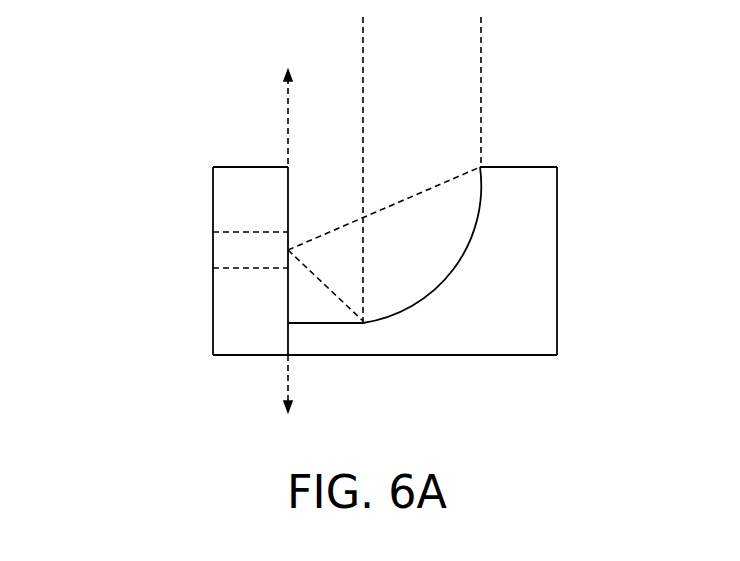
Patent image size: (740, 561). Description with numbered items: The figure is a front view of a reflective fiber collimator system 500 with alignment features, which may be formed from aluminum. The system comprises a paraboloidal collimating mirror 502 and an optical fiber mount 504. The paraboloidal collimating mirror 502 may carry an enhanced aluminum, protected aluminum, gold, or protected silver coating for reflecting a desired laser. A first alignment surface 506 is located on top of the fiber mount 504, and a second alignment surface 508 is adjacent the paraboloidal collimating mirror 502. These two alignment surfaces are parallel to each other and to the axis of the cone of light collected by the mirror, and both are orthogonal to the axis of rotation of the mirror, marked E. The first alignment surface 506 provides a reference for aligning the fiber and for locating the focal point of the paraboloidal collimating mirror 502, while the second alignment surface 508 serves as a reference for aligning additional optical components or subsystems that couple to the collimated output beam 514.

The reflective fiber collimator system 500 is at (98, 70).
The paraboloidal collimating mirror 502 is at (488, 209).
The optical fiber mount 504 is at (204, 194).
The first alignment surface 506 is at (254, 155).
The second alignment surface 508 is at (535, 155).
The collimated output beam 514 is at (490, 96).